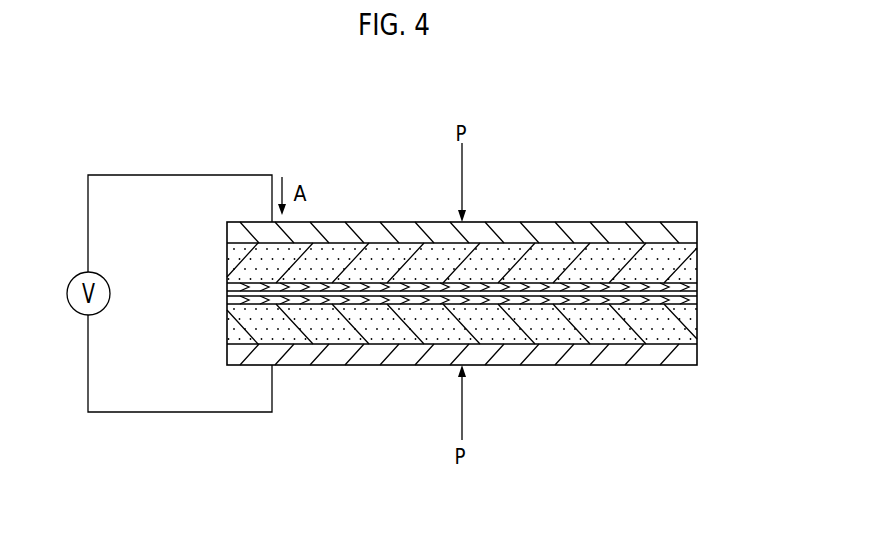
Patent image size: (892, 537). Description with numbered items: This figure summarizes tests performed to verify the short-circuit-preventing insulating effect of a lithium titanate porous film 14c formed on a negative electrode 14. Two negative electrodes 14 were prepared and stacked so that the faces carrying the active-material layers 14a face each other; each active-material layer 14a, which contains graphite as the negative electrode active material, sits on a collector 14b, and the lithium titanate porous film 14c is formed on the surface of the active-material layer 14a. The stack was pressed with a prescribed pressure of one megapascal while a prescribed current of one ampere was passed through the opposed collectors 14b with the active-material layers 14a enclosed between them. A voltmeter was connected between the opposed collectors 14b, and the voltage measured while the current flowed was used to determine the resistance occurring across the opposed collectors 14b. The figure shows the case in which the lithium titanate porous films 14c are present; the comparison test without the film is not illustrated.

The negative electrode 14 is at (684, 186).
The active-material layer 14a is at (613, 253).
The collector 14b is at (567, 222).
The lithium titanate porous film 14c is at (373, 284).